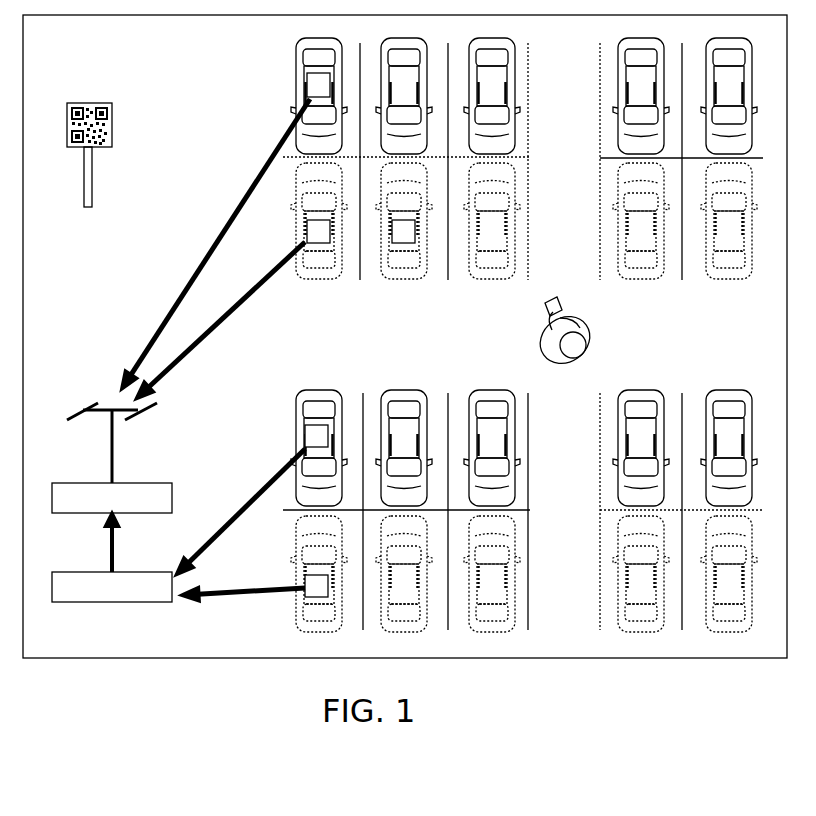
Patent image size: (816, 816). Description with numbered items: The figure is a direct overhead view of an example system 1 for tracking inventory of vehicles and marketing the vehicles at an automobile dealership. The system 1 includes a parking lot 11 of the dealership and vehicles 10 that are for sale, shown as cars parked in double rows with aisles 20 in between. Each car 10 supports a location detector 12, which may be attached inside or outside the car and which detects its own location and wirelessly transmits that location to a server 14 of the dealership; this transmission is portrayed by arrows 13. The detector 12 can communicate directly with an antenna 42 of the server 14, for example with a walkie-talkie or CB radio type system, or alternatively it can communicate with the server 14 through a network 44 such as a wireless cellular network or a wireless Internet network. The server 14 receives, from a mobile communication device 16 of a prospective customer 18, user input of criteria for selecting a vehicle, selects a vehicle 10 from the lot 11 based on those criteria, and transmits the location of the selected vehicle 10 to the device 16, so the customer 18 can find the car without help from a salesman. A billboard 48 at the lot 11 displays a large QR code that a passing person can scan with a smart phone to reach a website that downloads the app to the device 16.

The system 1 is at (95, 63).
The billboard 48 is at (116, 155).
The parking lot 11 is at (570, 51).
The aisles 20 is at (409, 348).
The vehicles 10 is at (516, 142).
The location detector 12 is at (318, 425).
The arrows 13 is at (236, 300).
The antenna 42 is at (115, 440).
The server 14 is at (172, 483).
The network 44 is at (137, 572).
The mobile communication device 16 is at (548, 310).
The customer 18 is at (537, 342).